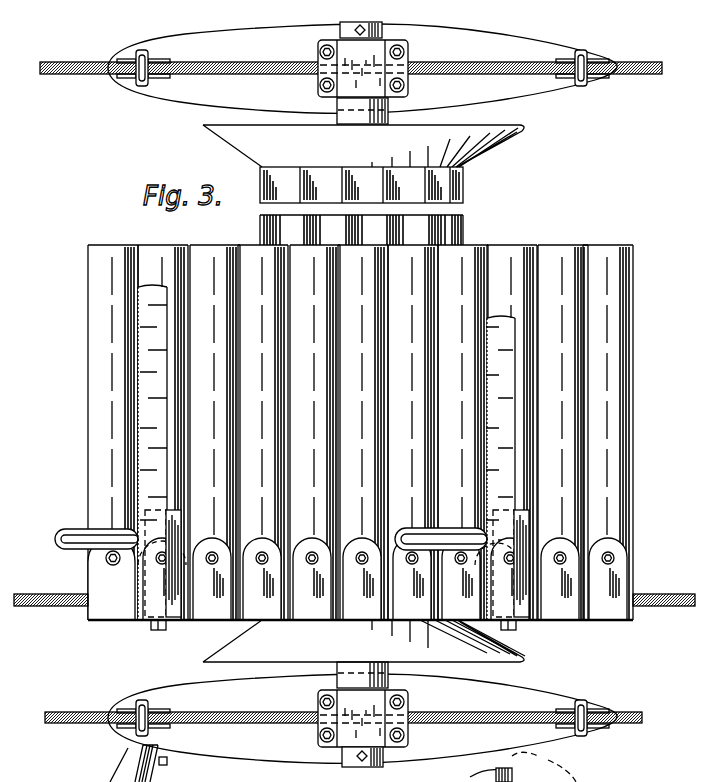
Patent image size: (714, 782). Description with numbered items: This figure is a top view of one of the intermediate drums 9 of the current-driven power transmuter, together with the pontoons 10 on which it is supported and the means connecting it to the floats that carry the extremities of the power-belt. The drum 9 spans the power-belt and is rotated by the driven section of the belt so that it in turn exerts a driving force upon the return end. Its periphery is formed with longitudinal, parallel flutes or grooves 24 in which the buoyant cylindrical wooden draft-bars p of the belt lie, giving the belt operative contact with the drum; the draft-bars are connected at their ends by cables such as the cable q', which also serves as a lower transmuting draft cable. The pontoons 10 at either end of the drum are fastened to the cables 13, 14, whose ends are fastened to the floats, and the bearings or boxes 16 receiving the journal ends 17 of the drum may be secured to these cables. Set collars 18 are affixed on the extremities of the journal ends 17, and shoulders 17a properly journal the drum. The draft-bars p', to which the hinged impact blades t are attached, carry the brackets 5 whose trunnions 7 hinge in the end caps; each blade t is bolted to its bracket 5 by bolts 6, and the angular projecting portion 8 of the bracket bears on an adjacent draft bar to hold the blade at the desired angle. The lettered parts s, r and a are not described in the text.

The set collar 18 is at (349, 22).
The journal end 17 is at (362, 22).
The bearing or box 16 is at (381, 47).
The cable 14 is at (628, 64).
The pontoon 10 is at (549, 90).
The shoulder 17a is at (387, 105).
The intermediate drum 9 is at (262, 172).
The longitudinal flutes or grooves 24 is at (442, 192).
The draft-bar p is at (373, 420).
The draft-bar p' is at (163, 420).
The impact blade t is at (326, 452).
The angular projecting portion 8 is at (58, 545).
The pin s is at (108, 558).
The cable q' is at (354, 611).
The plate r is at (115, 613).
The fan wires a is at (520, 656).
The cable 13 is at (633, 713).
The bracket 5 is at (297, 765).
The bolt 6 is at (167, 761).
The trunnion 7 is at (160, 777).